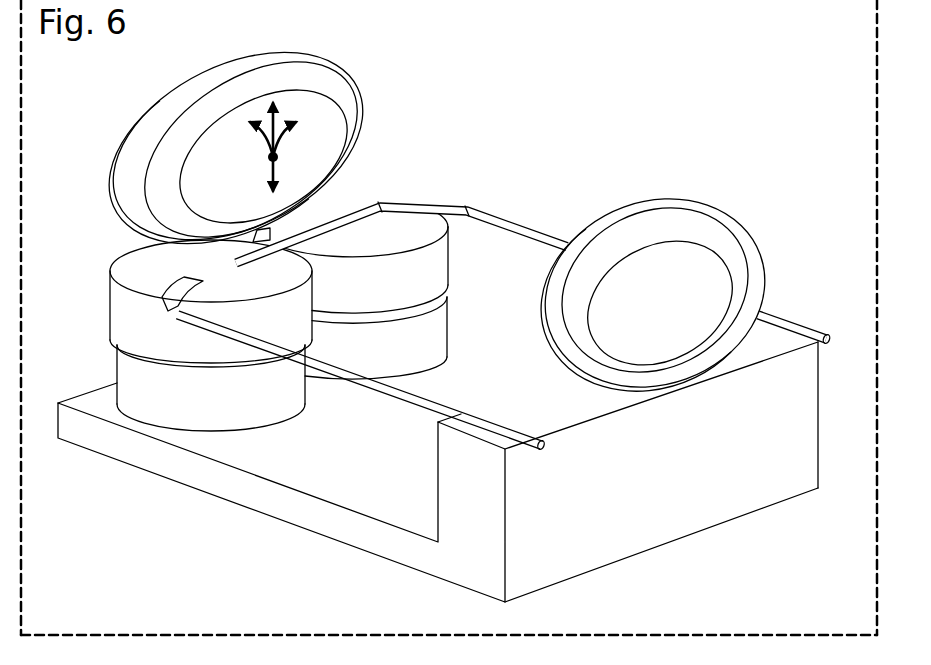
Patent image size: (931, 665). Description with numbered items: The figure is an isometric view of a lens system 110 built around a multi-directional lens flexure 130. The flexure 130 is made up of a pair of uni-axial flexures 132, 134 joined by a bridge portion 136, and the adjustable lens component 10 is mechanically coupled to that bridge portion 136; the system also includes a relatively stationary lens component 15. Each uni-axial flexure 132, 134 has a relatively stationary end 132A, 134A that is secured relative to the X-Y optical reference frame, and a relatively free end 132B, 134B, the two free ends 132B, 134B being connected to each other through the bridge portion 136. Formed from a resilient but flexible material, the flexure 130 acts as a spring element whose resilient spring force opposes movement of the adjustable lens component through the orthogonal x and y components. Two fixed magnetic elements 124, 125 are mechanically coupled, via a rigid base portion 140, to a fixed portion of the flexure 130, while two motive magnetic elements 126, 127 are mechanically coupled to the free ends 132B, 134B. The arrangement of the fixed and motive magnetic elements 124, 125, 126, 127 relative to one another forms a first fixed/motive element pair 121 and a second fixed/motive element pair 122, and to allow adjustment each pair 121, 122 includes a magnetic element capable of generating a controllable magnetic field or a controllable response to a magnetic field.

The adjustable lens component 10 is at (363, 140).
The relatively stationary lens component 15 is at (747, 227).
The lens system 110 is at (624, 79).
The first fixed/motive element pair 121 is at (209, 352).
The second fixed/motive element pair 122 is at (412, 305).
The fixed magnetic element 124 is at (262, 428).
The fixed magnetic element 125 is at (527, 388).
The motive magnetic element 126 is at (312, 327).
The motive magnetic element 127 is at (366, 260).
The multi-directional lens flexure 130 is at (512, 180).
The uni-axial flexure 132 is at (372, 356).
The relatively stationary end 132A is at (530, 433).
The relatively free end 132B is at (170, 310).
The uni-axial flexure 134 is at (544, 242).
The relatively stationary end 134A is at (795, 320).
The relatively free end 134B is at (440, 197).
The bridge portion 136 is at (350, 220).
The rigid base portion 140 is at (548, 585).